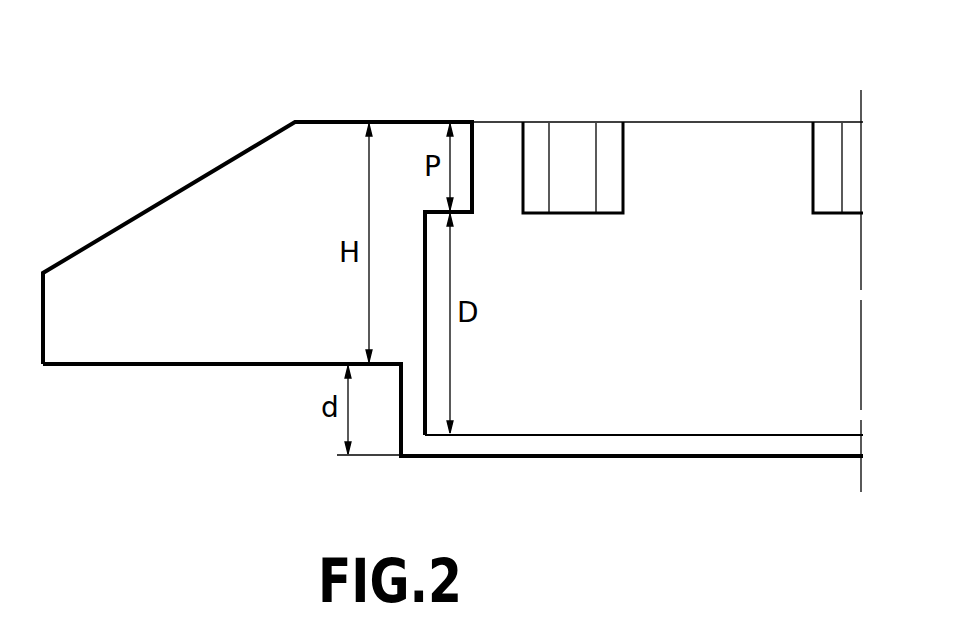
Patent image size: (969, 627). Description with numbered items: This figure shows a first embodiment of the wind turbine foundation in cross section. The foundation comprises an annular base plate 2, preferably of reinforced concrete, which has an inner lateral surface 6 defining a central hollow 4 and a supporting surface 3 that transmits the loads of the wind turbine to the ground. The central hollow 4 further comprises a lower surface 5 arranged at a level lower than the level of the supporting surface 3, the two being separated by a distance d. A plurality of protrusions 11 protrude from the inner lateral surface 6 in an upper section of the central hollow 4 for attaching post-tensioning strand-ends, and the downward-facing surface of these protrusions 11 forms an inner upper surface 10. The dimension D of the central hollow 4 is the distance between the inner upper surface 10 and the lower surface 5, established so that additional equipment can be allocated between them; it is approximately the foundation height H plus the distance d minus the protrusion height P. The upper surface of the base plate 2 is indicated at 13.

The annular base plate 2 is at (232, 284).
The supporting surface 3 is at (150, 366).
The central hollow 4 is at (705, 349).
The lower surface 5 is at (585, 446).
The inner lateral surface 6 is at (423, 290).
The inner upper surface 10 is at (472, 217).
The protrusions 11 is at (473, 158).
The top surface 13 is at (341, 120).